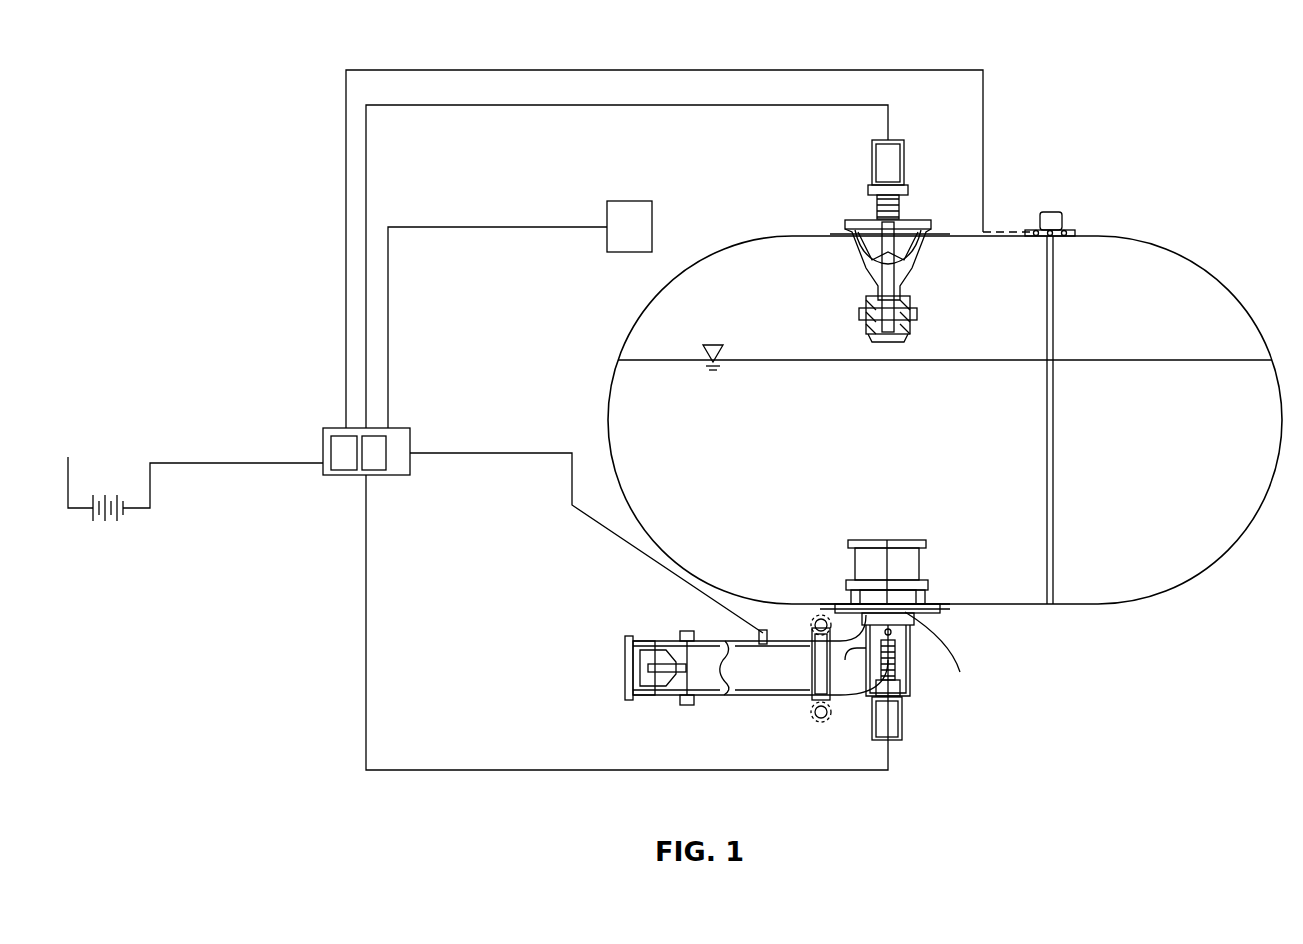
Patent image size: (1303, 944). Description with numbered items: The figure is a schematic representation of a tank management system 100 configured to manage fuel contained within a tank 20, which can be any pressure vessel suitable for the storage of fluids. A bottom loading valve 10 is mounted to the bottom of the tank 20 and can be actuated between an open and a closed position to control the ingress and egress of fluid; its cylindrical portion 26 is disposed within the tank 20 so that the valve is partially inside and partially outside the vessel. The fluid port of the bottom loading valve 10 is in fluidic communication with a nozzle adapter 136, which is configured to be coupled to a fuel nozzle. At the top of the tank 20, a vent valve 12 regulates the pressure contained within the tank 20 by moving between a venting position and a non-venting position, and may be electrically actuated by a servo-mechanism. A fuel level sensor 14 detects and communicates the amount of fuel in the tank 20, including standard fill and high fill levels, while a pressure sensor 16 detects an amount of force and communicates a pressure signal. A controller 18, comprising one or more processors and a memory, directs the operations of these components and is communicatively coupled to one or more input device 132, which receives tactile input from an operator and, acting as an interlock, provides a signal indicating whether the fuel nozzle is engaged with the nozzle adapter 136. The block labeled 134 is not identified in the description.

The tank management system 100 is at (246, 82).
The bottom loading valve 10 is at (922, 616).
The vent valve 12 is at (908, 226).
The fuel level sensor 14 is at (1061, 212).
The pressure sensor 16 is at (770, 628).
The controller 18 is at (374, 478).
The tank 20 is at (1176, 252).
The cylindrical portion 26 is at (930, 578).
The input device 132 is at (388, 449).
The remote unit 134 is at (652, 228).
The nozzle adapter 136 is at (627, 645).